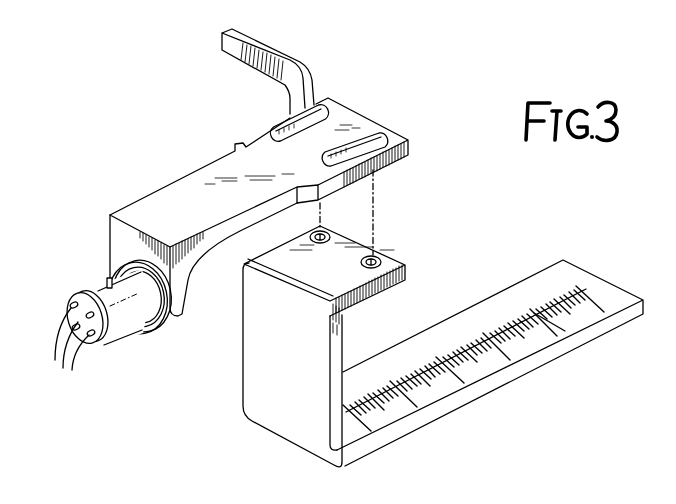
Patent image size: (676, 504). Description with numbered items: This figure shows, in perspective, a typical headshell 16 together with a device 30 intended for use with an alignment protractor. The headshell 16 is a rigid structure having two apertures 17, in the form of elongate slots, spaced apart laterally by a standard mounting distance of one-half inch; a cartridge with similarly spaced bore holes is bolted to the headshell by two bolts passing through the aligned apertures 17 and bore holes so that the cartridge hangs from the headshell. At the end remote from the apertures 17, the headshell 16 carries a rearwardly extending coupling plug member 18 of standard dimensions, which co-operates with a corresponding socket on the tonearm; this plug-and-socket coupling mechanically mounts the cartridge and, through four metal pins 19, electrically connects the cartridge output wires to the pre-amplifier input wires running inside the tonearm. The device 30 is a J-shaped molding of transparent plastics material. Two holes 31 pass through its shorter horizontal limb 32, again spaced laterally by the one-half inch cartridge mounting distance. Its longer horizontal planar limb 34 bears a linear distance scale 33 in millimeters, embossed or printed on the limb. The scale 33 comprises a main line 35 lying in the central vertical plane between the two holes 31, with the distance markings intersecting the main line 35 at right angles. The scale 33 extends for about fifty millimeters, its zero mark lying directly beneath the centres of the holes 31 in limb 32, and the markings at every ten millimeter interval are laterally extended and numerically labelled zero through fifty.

The headshell 16 is at (209, 164).
The apertures 17 is at (372, 137).
The coupling plug member 18 is at (117, 322).
The metal pins 19 is at (62, 348).
The device 30 is at (491, 402).
The holes 31 is at (369, 257).
The shorter horizontal limb 32 is at (333, 272).
The linear distance scale 33 is at (530, 288).
The longer horizontal planar limb 34 is at (600, 281).
The main line 35 is at (536, 316).